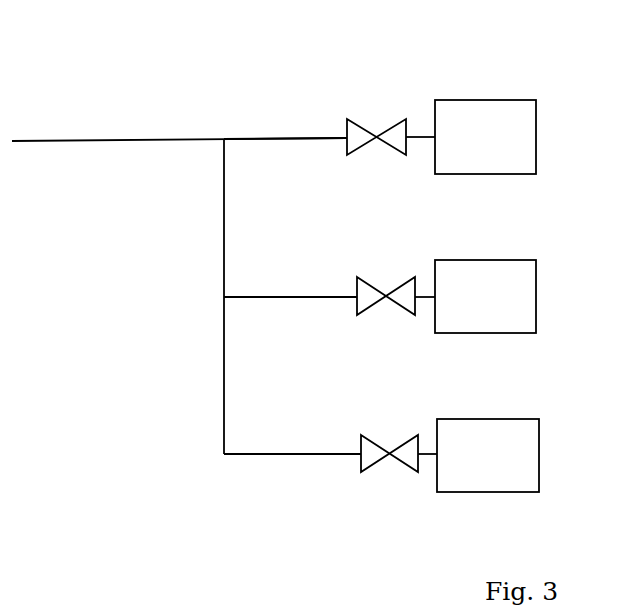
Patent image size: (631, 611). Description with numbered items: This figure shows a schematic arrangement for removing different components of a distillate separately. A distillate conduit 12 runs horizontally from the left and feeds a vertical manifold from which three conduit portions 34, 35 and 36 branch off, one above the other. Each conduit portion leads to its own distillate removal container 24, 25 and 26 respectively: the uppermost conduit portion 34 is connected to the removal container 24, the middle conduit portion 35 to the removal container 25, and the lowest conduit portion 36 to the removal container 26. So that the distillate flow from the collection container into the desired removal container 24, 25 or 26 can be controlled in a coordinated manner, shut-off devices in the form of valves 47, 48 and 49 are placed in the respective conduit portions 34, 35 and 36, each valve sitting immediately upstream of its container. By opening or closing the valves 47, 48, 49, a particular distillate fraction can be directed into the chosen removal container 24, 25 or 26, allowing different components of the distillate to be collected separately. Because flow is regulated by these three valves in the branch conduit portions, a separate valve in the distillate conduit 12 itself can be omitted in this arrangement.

The distillate conduit 12 is at (116, 136).
The conduit portion 34 is at (310, 133).
The conduit portion 35 is at (329, 293).
The conduit portion 36 is at (319, 452).
The valve 47 is at (377, 130).
The valve 48 is at (390, 285).
The valve 49 is at (391, 447).
The distillate removal container 24 is at (493, 117).
The distillate removal container 25 is at (518, 293).
The distillate removal container 26 is at (522, 456).